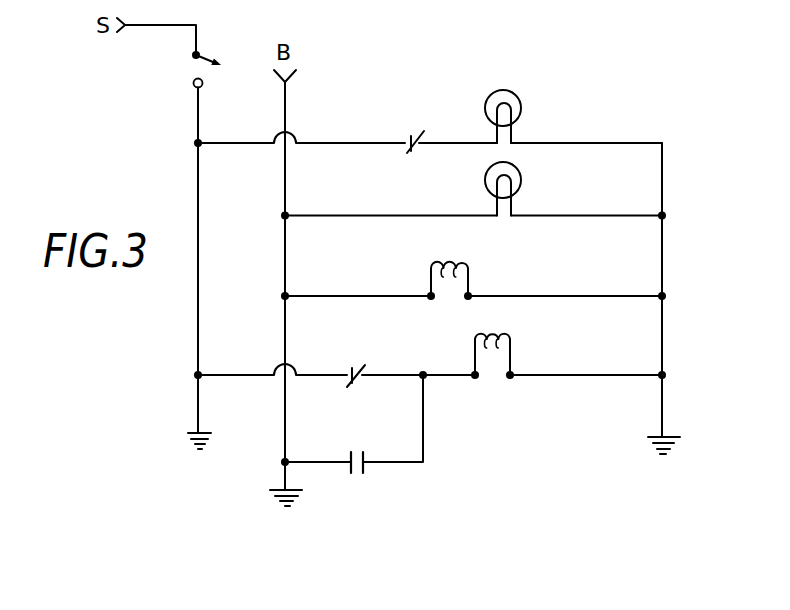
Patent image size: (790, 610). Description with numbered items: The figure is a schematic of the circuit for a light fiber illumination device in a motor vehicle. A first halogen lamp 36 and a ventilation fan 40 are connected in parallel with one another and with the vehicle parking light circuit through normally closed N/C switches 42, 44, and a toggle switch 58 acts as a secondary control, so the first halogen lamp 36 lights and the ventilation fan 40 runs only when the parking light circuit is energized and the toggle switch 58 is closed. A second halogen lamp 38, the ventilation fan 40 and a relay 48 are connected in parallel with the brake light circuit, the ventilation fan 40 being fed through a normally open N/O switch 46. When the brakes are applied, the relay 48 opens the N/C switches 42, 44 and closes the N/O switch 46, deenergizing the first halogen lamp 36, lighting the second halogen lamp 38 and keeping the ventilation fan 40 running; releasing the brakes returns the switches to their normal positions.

The toggle switch 58 is at (221, 60).
The N/C switch 42 is at (417, 123).
The first halogen lamp 36 is at (522, 103).
The second halogen lamp 38 is at (522, 188).
The relay 48 is at (469, 271).
The N/C switch 44 is at (366, 371).
The ventilation fan 40 is at (510, 338).
The N/O switch 46 is at (367, 465).